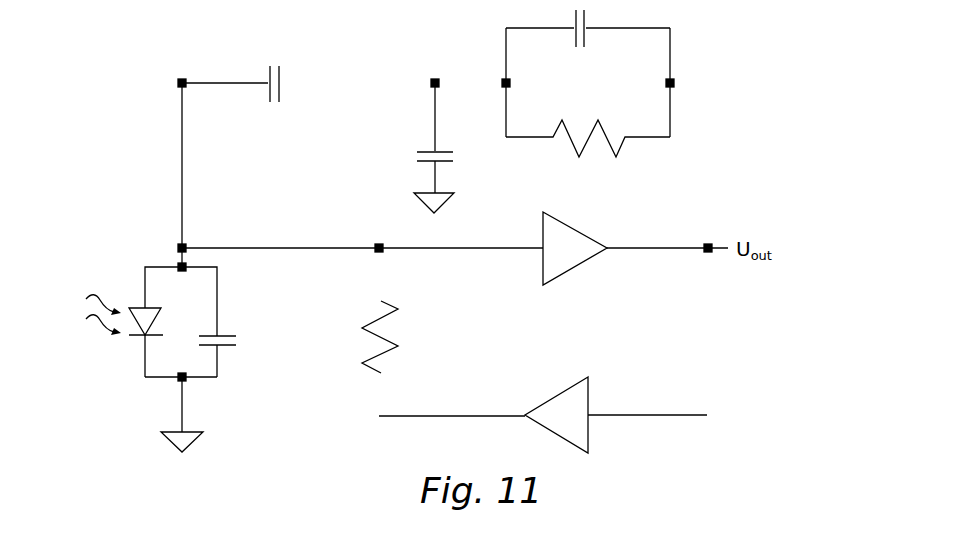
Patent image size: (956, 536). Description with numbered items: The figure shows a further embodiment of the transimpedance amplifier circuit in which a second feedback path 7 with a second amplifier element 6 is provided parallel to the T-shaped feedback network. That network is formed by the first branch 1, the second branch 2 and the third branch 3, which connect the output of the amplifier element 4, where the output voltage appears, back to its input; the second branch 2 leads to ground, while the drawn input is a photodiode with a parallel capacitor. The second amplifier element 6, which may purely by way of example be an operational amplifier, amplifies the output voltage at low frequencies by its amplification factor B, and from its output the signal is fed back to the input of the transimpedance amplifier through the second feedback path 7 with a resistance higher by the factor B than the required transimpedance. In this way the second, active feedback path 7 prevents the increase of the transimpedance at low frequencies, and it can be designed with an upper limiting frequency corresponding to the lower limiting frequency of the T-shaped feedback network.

The first branch 1 is at (739, 86).
The second branch 2 is at (412, 133).
The third branch 3 is at (150, 62).
The amplifier element 4 is at (635, 265).
The second amplifier element 6 is at (616, 420).
The second feedback path 7 is at (412, 386).